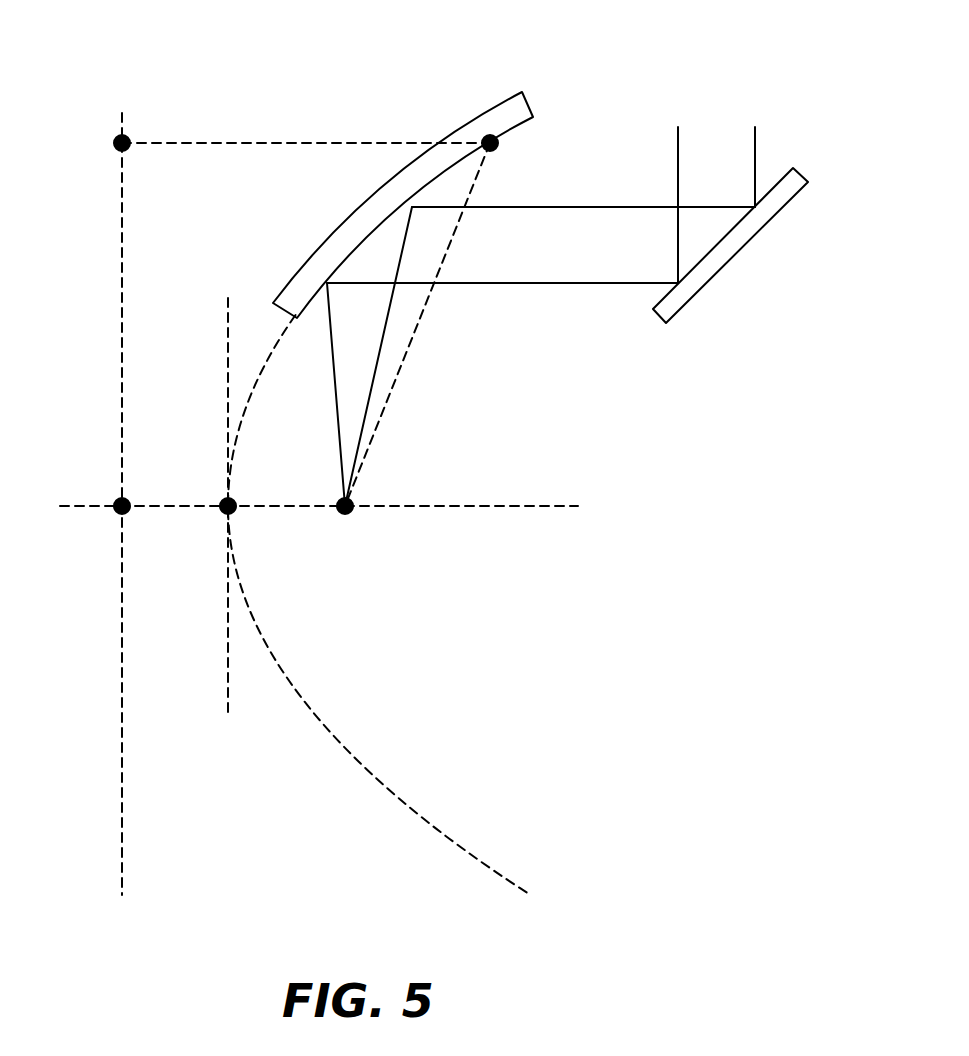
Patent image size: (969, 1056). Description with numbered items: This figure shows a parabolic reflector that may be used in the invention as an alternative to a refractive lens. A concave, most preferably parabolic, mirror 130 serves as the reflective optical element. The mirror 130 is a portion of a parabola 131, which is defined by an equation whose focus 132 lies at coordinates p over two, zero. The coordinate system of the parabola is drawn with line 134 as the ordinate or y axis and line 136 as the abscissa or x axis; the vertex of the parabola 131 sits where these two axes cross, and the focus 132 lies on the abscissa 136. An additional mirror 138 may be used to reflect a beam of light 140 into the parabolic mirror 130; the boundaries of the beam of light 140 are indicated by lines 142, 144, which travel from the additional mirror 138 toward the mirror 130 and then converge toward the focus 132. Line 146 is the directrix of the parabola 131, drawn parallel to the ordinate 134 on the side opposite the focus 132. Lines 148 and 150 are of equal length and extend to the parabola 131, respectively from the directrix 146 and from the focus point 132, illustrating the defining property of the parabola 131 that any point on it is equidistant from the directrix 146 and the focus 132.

The parabolic mirror 130 is at (507, 107).
The parabola 131 is at (369, 775).
The focus 132 is at (344, 512).
The ordinate 134 is at (228, 352).
The abscissa 136 is at (481, 508).
The additional mirror 138 is at (793, 170).
The beam of light 140 is at (747, 83).
The beam boundary line 142 is at (595, 207).
The beam boundary line 144 is at (482, 284).
The directrix 146 is at (120, 221).
The line from directrix 148 is at (170, 143).
The line from focus 150 is at (384, 408).